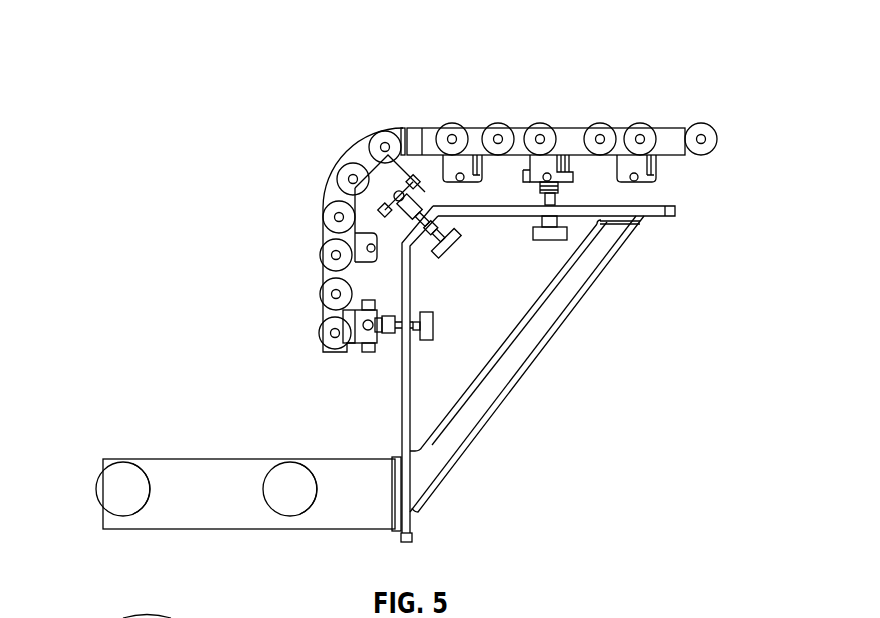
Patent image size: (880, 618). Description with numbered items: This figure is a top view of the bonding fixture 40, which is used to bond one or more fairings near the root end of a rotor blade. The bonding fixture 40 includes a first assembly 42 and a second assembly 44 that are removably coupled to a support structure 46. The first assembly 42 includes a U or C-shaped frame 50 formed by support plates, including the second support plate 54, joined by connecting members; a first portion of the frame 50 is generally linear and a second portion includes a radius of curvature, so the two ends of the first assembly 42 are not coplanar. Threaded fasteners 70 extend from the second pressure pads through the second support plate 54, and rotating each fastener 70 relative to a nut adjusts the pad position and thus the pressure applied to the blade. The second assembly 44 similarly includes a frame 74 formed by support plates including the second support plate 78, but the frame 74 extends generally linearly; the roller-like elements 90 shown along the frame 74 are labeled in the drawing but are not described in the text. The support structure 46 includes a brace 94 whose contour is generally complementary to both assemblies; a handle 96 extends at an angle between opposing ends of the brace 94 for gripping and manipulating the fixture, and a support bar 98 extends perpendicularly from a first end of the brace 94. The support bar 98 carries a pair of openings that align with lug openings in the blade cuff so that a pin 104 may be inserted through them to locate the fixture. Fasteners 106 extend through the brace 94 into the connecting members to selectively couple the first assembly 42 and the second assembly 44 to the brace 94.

The bonding fixture 40 is at (723, 60).
The first assembly 42 is at (316, 194).
The second assembly 44 is at (599, 69).
The support structure 46 is at (472, 466).
The frame 50 is at (360, 148).
The second support plate 54 is at (324, 234).
The threaded fastener 70 is at (334, 294).
The frame 74 is at (432, 128).
The second support plate 78 is at (570, 143).
The rollers 90 is at (640, 131).
The brace 94 is at (407, 288).
The handle 96 is at (557, 303).
The support bar 98 is at (232, 520).
The pin 104 is at (113, 486).
The fasteners 106 is at (460, 250).